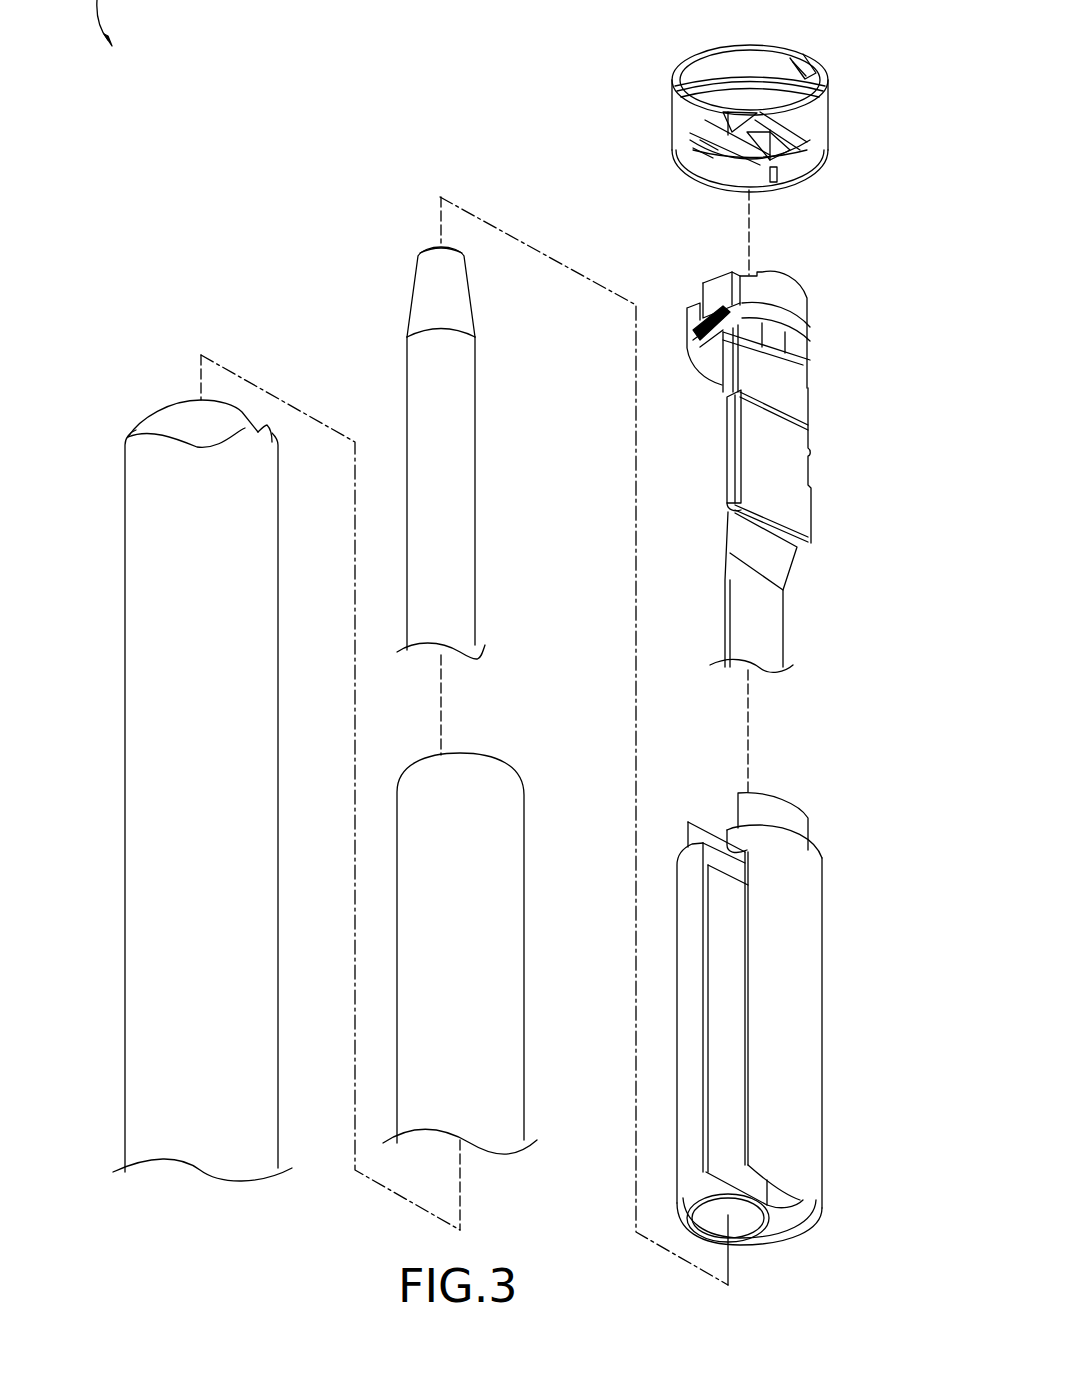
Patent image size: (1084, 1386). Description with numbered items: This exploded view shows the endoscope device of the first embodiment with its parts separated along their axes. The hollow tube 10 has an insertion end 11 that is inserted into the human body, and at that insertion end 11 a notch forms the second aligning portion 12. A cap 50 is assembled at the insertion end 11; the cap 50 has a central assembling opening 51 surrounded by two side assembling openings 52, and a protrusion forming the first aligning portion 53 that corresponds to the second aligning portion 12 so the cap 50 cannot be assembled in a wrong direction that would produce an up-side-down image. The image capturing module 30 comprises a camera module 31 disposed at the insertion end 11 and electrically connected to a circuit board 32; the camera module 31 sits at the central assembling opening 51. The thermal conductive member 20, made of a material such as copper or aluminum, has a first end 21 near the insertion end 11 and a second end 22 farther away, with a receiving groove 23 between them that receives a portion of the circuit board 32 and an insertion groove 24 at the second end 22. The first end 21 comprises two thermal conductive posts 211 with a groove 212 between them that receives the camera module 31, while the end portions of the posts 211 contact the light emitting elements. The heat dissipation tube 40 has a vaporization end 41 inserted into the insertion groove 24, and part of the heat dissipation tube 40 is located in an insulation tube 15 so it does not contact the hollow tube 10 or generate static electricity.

The hollow tube 10 is at (124, 514).
The insertion end 11 is at (175, 412).
The second aligning portion 12 is at (128, 437).
The insulation tube 15 is at (525, 783).
The thermal conductive member 20 is at (779, 1004).
The first end 21 is at (803, 855).
The thermal conductive posts 211 is at (690, 842).
The groove 212 is at (721, 802).
The second end 22 is at (803, 1207).
The receiving groove 23 is at (730, 930).
The insertion groove 24 is at (752, 1223).
The image capturing module 30 is at (814, 471).
The camera module 31 is at (717, 293).
The circuit board 32 is at (808, 465).
The heat dissipation tube 40 is at (478, 378).
The vaporization end 41 is at (455, 290).
The cap 50 is at (690, 72).
The central assembling opening 51 is at (720, 124).
The side assembling openings 52 is at (790, 130).
The first aligning portion 53 is at (808, 75).